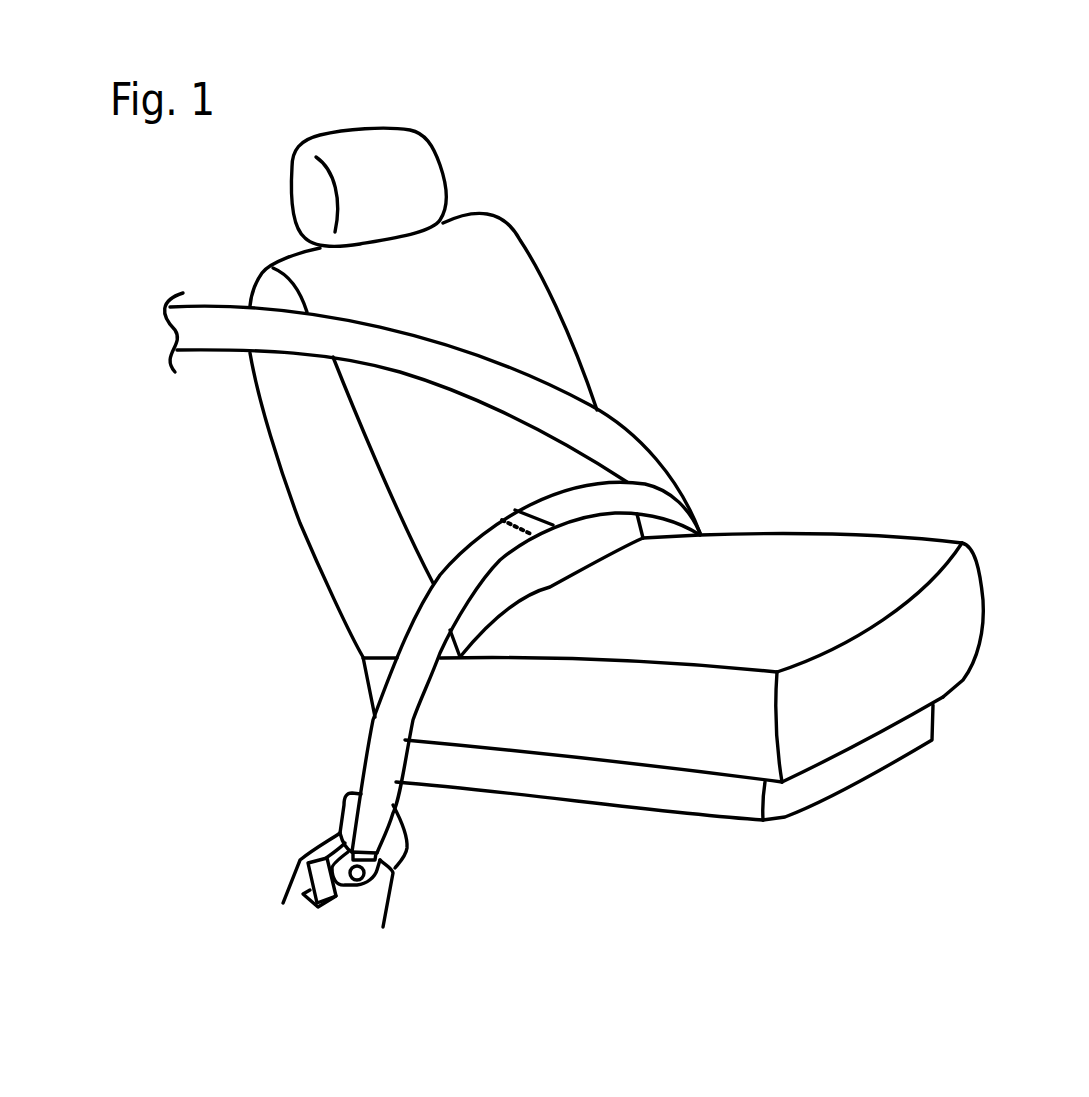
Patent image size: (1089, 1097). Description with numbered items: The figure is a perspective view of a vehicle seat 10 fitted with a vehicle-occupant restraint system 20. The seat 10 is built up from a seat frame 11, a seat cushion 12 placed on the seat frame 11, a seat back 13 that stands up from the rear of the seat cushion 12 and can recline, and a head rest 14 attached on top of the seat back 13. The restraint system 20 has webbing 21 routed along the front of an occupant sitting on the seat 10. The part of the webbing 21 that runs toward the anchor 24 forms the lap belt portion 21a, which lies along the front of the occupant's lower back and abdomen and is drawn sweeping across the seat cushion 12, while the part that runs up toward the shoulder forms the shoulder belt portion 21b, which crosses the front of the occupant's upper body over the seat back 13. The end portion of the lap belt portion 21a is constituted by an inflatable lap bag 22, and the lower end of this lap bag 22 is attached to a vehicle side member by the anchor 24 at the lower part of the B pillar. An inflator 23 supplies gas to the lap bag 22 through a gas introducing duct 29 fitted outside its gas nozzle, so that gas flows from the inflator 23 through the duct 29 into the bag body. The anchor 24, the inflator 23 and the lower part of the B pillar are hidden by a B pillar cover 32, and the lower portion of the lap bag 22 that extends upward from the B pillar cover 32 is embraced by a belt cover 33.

The seat 10 is at (544, 199).
The seat frame 11 is at (590, 782).
The seat cushion 12 is at (960, 608).
The seat back 13 is at (310, 482).
The head rest 14 is at (386, 150).
The vehicle-occupant restraint system 20 is at (341, 617).
The webbing 21 is at (632, 400).
The lap belt portion 21a is at (647, 502).
The shoulder belt portion 21b is at (627, 433).
The inflatable lap bag 22 is at (482, 562).
The inflator 23 is at (305, 858).
The anchor 24 is at (397, 877).
The gas introducing duct 29 is at (328, 830).
The B pillar cover 32 is at (408, 847).
The belt cover 33 is at (343, 805).